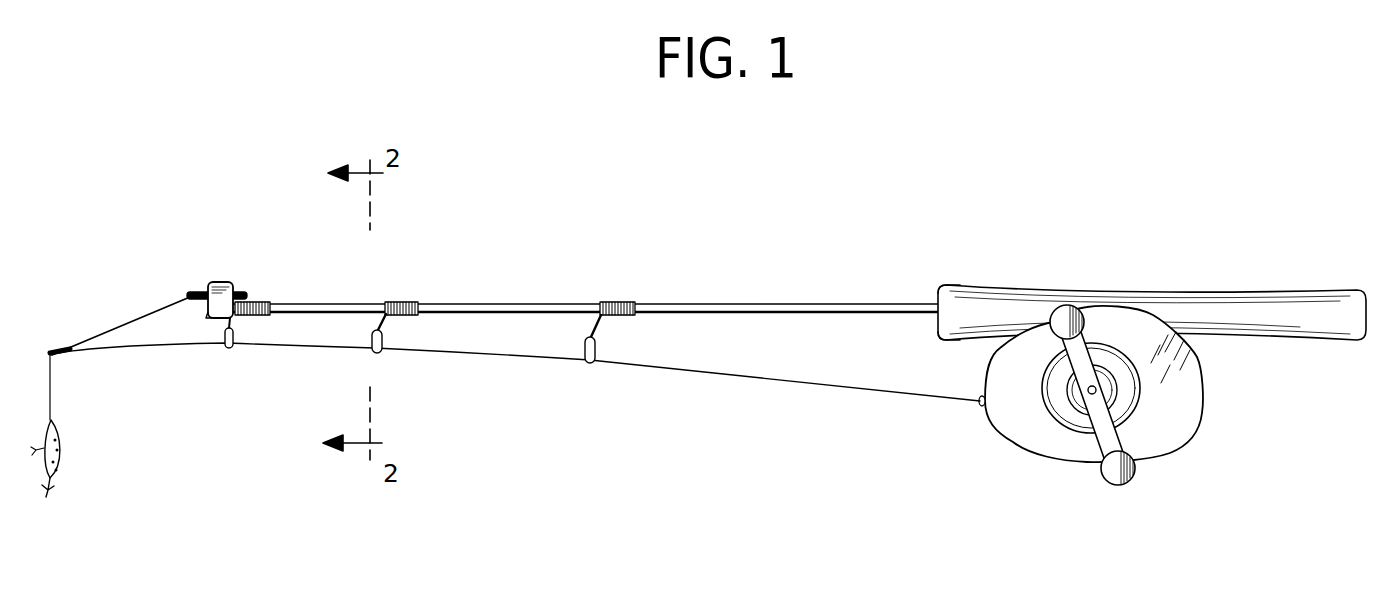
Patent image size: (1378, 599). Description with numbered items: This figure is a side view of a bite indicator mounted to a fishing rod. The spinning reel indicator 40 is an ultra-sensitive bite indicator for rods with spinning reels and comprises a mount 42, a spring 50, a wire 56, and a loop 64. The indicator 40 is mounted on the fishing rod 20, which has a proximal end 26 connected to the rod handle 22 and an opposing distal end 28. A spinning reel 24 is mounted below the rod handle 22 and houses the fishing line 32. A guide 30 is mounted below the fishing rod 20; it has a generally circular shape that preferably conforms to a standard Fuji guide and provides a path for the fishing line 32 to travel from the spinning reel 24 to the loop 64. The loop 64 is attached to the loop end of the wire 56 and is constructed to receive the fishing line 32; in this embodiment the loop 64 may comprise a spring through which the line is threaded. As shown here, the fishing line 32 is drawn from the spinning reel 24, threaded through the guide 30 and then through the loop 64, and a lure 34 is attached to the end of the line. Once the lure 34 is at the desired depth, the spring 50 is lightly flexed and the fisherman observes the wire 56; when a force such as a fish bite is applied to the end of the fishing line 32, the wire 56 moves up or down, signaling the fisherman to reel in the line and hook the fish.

The fishing rod 20 is at (543, 300).
The rod handle 22 is at (1283, 290).
The spinning reel 24 is at (1165, 428).
The proximal end 26 is at (938, 300).
The distal end 28 is at (207, 318).
The guide 30 is at (230, 348).
The fishing line 32 is at (552, 358).
The lure 34 is at (65, 443).
The spinning reel indicator 40 is at (177, 288).
The mount 42 is at (218, 283).
The spring 50 is at (245, 293).
The wire 56 is at (130, 320).
The loop 64 is at (55, 360).